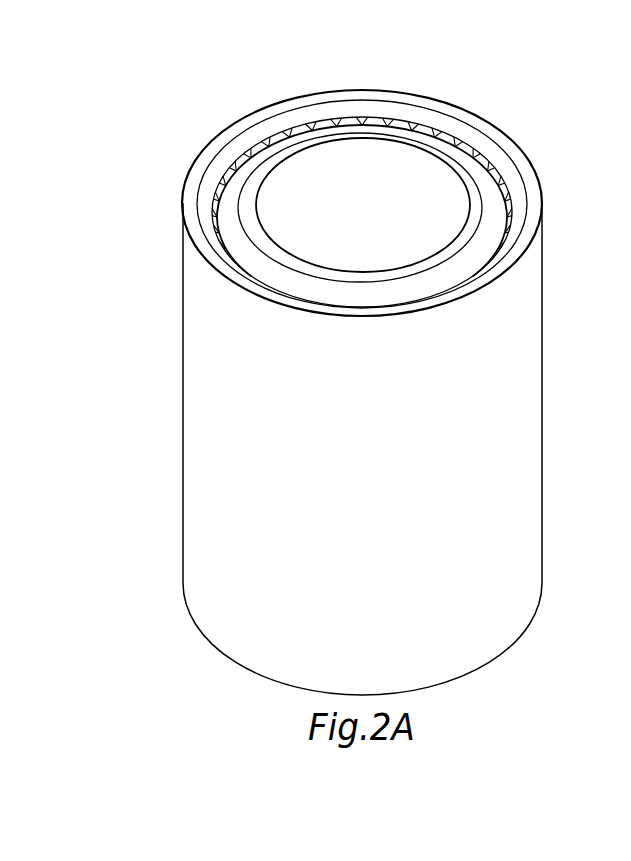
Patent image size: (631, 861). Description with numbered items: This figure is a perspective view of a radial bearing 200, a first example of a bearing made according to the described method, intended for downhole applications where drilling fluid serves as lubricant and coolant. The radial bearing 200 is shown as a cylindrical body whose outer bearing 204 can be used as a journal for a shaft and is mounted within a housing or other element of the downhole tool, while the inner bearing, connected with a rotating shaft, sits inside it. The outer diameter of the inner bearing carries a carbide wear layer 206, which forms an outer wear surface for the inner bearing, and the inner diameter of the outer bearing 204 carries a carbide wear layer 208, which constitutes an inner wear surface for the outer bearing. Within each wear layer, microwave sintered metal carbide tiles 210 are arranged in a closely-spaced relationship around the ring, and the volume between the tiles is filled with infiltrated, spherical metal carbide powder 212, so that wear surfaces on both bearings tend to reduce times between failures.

The radial bearing 200 is at (163, 181).
The outer bearing 204 is at (537, 292).
The carbide wear layer 206 is at (221, 178).
The carbide wear layer 208 is at (352, 117).
The microwave sintered metal carbide tiles 210 is at (321, 120).
The infiltrated spherical metal carbide powder 212 is at (247, 152).